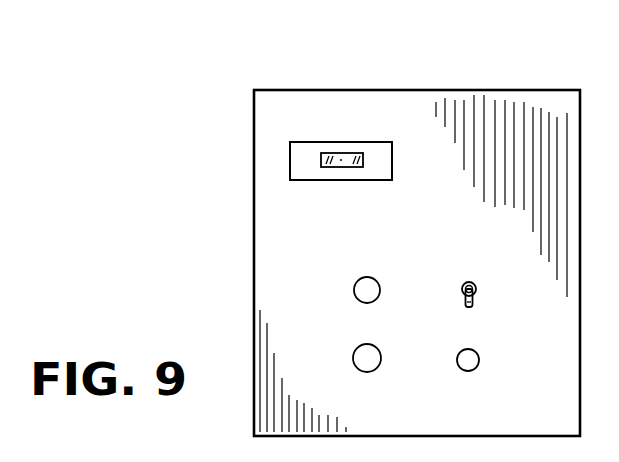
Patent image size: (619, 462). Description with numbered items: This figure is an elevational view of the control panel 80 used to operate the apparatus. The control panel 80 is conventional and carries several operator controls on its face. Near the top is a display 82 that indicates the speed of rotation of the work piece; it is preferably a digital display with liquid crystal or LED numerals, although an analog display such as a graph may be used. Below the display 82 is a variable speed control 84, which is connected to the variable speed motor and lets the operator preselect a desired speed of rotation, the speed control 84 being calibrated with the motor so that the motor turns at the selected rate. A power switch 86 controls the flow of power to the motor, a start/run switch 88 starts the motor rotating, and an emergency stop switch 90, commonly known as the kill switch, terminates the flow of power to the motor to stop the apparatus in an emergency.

The control panel 80 is at (508, 79).
The display 82 is at (358, 151).
The variable speed control 84 is at (370, 278).
The power switch 86 is at (477, 282).
The start/run switch 88 is at (352, 360).
The emergency stop switch 90 is at (476, 354).